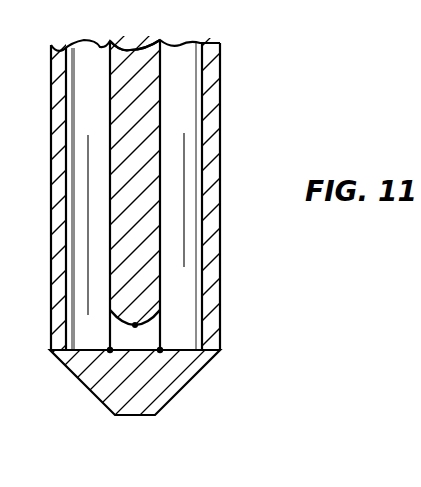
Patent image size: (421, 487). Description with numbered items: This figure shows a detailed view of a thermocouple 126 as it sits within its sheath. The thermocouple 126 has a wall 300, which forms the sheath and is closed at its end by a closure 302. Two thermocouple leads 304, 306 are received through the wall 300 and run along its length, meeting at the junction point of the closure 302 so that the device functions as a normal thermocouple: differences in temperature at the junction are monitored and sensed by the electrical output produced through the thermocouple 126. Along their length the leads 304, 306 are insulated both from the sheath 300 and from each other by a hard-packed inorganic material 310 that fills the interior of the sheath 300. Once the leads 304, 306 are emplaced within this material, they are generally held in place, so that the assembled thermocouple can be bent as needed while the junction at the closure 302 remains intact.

The thermocouple 126 is at (238, 78).
The wall 300 is at (205, 207).
The closure 302 is at (170, 380).
The thermocouple lead 304 is at (112, 44).
The thermocouple lead 306 is at (158, 40).
The hard-packed inorganic material 310 is at (205, 135).